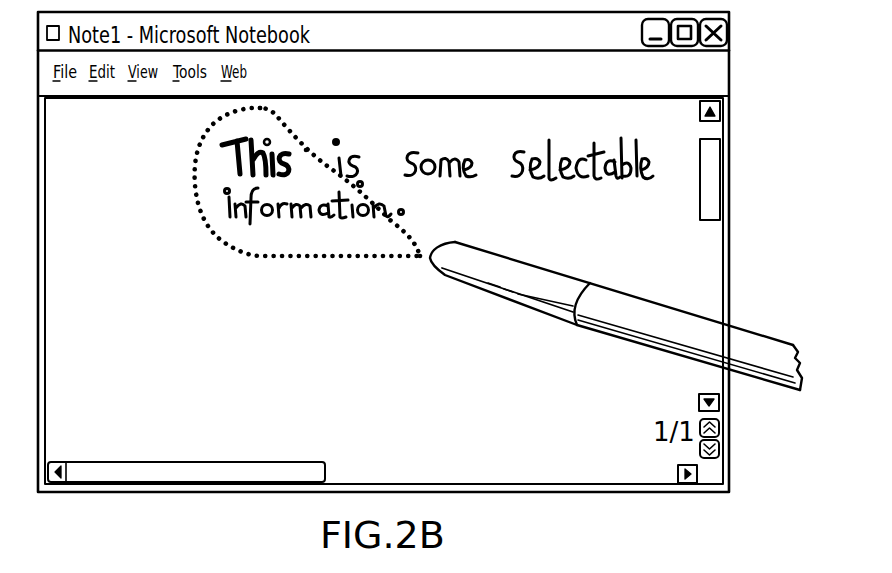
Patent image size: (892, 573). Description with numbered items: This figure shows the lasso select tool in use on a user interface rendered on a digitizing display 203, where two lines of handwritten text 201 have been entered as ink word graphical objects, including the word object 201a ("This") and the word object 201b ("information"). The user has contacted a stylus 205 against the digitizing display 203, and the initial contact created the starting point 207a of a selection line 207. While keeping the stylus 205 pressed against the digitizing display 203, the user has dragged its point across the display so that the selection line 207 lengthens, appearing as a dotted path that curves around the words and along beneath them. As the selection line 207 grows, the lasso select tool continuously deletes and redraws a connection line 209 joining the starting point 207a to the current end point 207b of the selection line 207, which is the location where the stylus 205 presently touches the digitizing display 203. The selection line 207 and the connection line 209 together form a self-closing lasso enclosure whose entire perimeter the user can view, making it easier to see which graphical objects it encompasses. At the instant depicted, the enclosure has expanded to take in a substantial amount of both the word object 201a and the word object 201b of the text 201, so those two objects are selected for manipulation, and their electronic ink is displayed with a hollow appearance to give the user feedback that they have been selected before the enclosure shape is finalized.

The text 201 is at (633, 152).
The word object 201a is at (229, 162).
The word object 201b is at (257, 225).
The digitizing display 203 is at (707, 288).
The stylus 205 is at (630, 293).
The selection line 207 is at (195, 198).
The starting point 207a is at (266, 108).
The current end point 207b is at (427, 255).
The connection line 209 is at (307, 148).